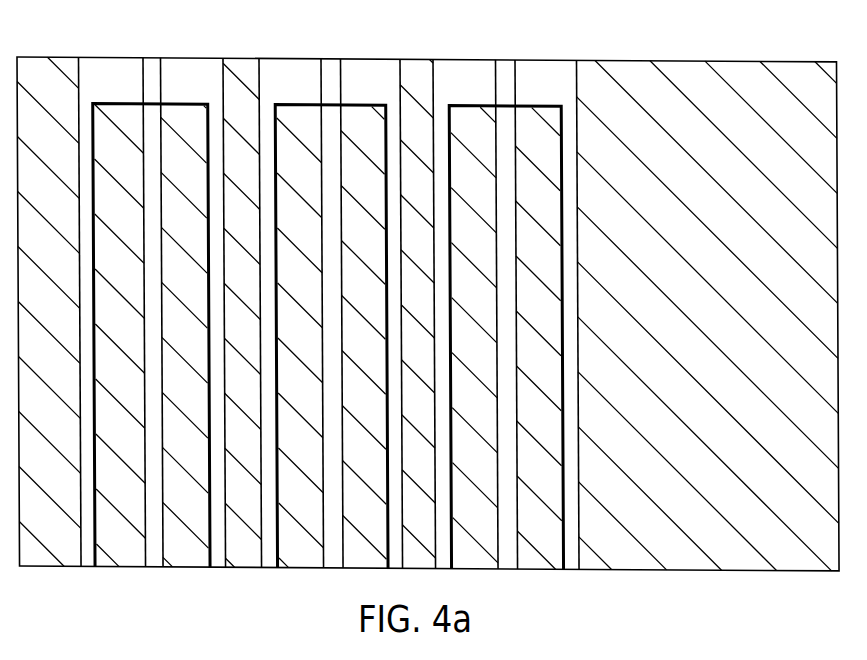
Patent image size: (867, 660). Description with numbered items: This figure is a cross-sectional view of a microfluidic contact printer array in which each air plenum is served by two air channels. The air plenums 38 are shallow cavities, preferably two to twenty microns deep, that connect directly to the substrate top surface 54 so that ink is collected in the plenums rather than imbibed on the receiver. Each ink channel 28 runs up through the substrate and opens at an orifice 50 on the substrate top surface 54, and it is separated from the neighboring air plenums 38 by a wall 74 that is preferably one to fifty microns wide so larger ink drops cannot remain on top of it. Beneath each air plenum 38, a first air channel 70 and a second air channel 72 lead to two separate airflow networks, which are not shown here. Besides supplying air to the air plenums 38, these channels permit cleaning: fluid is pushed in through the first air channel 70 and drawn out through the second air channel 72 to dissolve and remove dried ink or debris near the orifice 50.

The ink channel 28 is at (160, 387).
The air plenums 38 is at (205, 63).
The orifice 50 is at (152, 62).
The substrate top surface 54 is at (708, 290).
The first air channel 70 is at (218, 560).
The second air channel 72 is at (88, 560).
The wall 74 is at (180, 555).